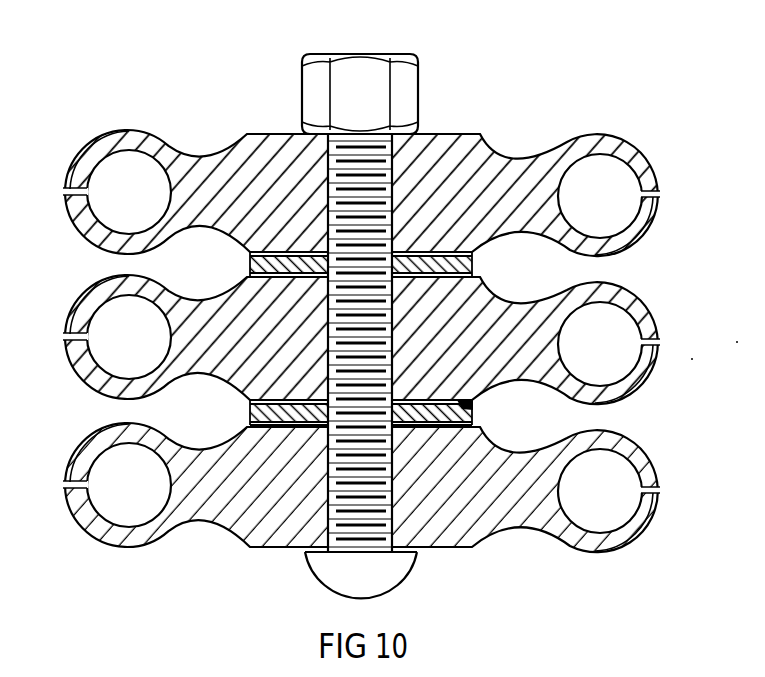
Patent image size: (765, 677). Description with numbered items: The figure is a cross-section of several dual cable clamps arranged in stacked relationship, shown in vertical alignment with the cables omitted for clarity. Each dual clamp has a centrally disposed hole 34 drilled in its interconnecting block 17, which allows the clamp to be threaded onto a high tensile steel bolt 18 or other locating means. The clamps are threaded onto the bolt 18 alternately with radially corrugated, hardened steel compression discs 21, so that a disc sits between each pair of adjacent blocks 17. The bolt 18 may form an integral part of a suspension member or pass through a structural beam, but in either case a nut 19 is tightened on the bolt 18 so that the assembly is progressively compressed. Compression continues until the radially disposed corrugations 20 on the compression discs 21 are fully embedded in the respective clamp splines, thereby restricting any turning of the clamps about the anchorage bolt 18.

The interconnecting block 17 is at (461, 136).
The bolt 18 is at (389, 558).
The nut 19 is at (405, 72).
The corrugations 20 is at (474, 404).
The compression discs 21 is at (249, 263).
The hole 34 is at (326, 284).